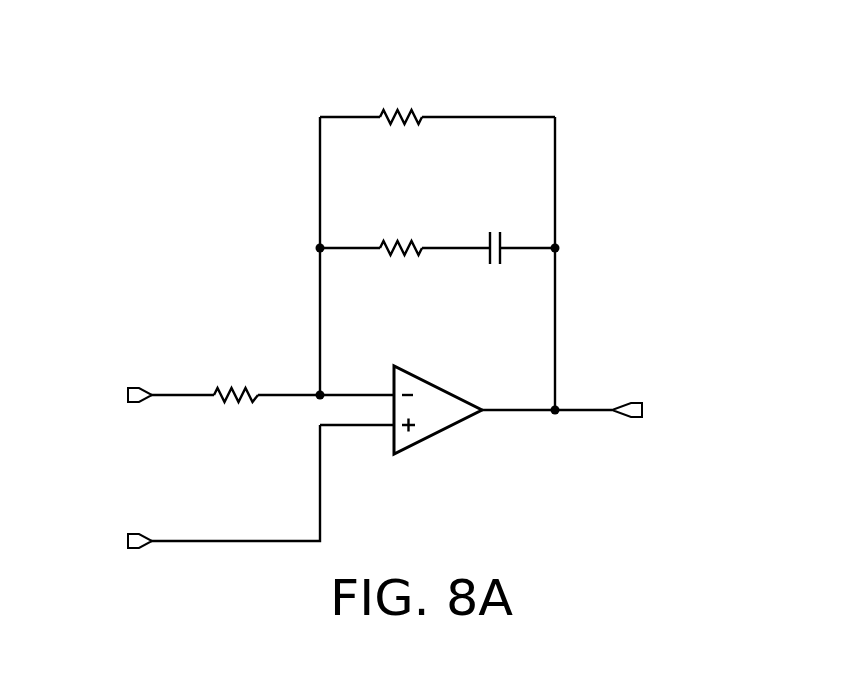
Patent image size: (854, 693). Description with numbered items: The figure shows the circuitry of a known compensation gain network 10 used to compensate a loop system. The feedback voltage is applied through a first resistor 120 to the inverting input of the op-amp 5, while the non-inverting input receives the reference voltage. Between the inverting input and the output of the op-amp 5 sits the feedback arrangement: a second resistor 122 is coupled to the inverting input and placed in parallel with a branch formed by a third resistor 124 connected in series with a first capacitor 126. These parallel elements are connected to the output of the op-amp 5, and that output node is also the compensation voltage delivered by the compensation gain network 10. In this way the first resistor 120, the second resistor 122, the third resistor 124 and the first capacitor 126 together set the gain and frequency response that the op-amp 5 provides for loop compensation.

The compensation gain network 10 is at (232, 190).
The op-amp 5 is at (438, 435).
The first resistor 120 is at (240, 408).
The second resistor 122 is at (398, 103).
The third resistor 124 is at (398, 262).
The first capacitor 126 is at (493, 265).